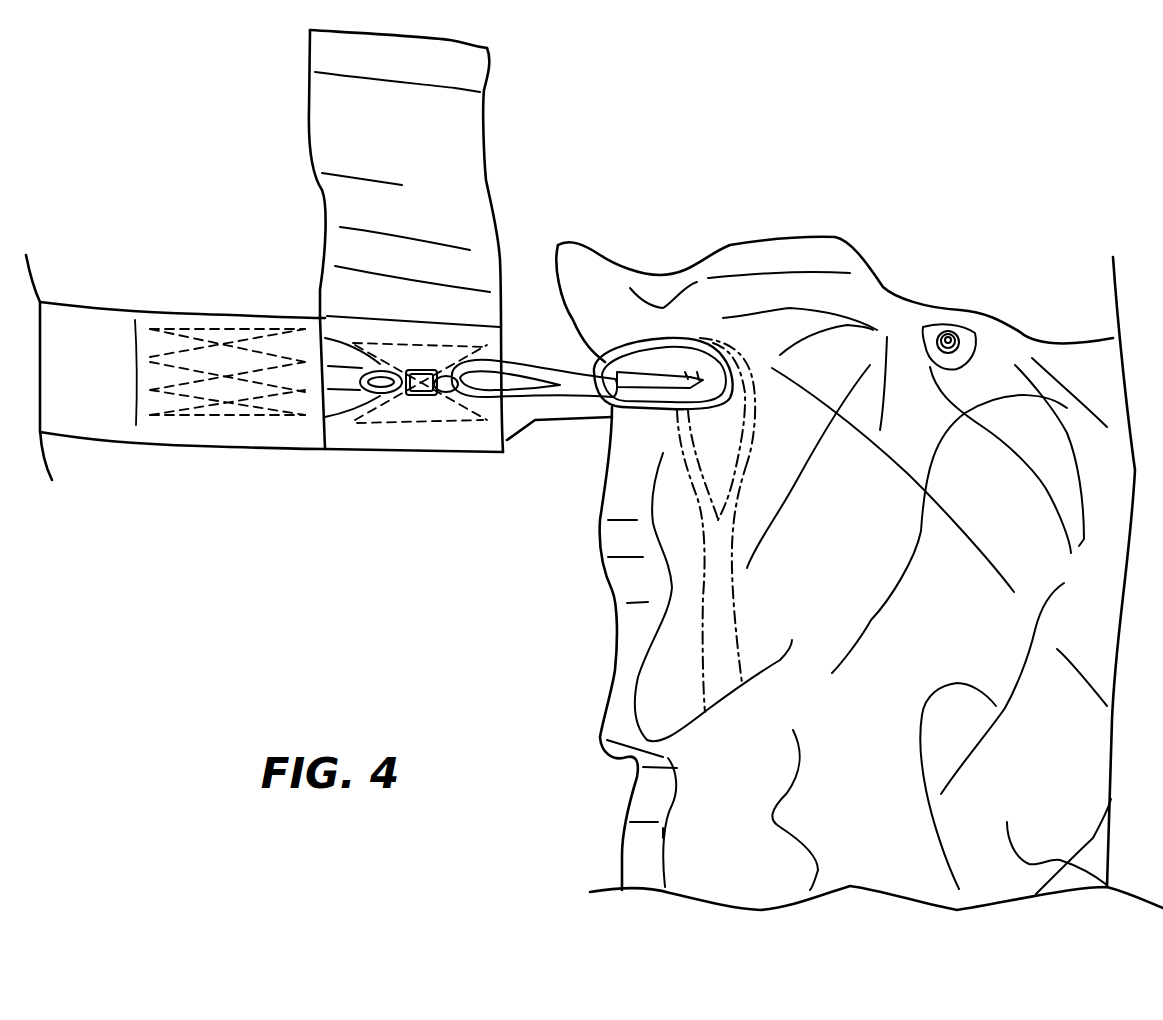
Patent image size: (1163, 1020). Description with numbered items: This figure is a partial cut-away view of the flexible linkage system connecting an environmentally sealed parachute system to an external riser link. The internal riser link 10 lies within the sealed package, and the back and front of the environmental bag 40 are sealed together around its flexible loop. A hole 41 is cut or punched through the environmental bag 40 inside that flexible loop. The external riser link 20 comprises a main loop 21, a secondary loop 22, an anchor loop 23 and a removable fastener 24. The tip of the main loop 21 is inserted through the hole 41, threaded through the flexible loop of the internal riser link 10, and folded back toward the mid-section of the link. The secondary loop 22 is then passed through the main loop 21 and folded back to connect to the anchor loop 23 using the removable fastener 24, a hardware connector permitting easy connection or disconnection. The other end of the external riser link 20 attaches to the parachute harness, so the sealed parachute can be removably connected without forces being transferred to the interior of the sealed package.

The internal riser link 10 is at (718, 572).
The external riser link 20 is at (218, 528).
The main loop 21 is at (603, 410).
The secondary loop 22 is at (513, 355).
The anchor loop 23 is at (343, 413).
The removable fastener 24 is at (428, 397).
The environmental bag 40 is at (612, 590).
The hole 41 is at (752, 405).